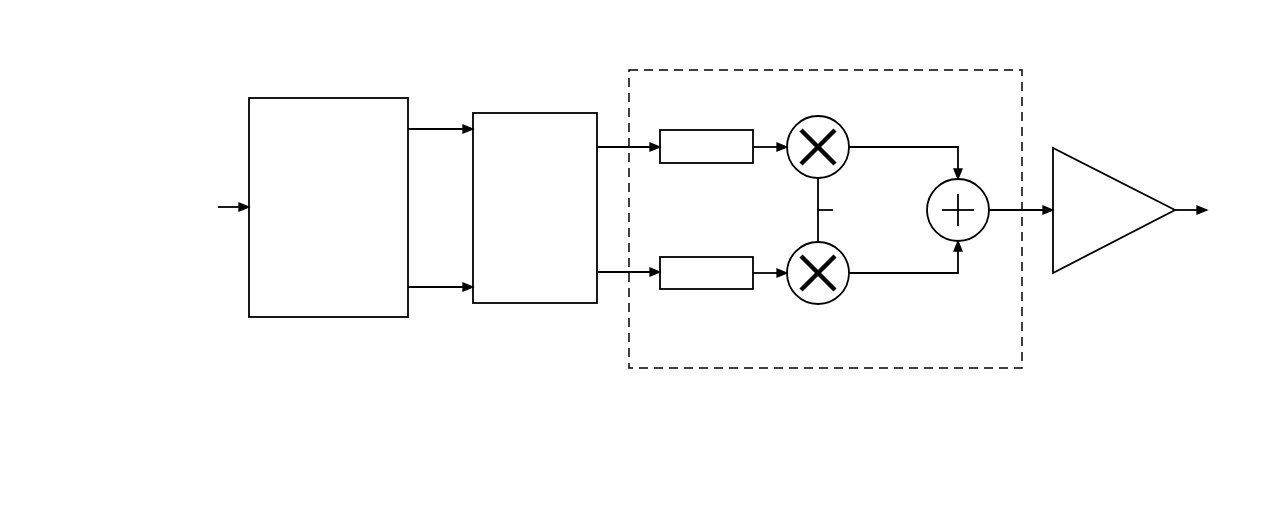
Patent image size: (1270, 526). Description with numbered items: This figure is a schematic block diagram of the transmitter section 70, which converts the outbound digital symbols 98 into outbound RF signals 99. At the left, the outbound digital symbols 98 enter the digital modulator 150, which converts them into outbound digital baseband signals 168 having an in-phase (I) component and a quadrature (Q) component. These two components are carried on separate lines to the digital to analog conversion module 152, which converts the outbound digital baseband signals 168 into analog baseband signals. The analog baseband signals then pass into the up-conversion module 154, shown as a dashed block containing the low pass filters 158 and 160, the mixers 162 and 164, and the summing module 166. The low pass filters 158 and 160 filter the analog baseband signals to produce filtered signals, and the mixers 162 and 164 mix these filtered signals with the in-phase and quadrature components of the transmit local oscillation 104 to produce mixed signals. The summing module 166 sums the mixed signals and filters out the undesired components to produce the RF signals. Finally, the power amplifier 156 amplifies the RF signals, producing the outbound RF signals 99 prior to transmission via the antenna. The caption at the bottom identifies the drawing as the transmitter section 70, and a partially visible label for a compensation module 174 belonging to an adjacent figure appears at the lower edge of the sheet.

The transmitter section 70 is at (712, 238).
The outbound digital symbols 98 is at (207, 204).
The digital modulator 150 is at (328, 207).
The outbound digital baseband signals 168 is at (440, 120).
The digital to analog conversion module 152 is at (566, 208).
The up-conversion module 154 is at (825, 219).
The low pass filter 158 is at (723, 146).
The low pass filter 160 is at (723, 273).
The mixer 162 is at (874, 138).
The mixer 164 is at (874, 281).
The transmit local oscillation 104 is at (859, 210).
The summing module 166 is at (964, 202).
The power amplifier 156 is at (1082, 210).
The outbound RF signals 99 is at (1216, 211).
The compensation module 174 is at (511, 510).